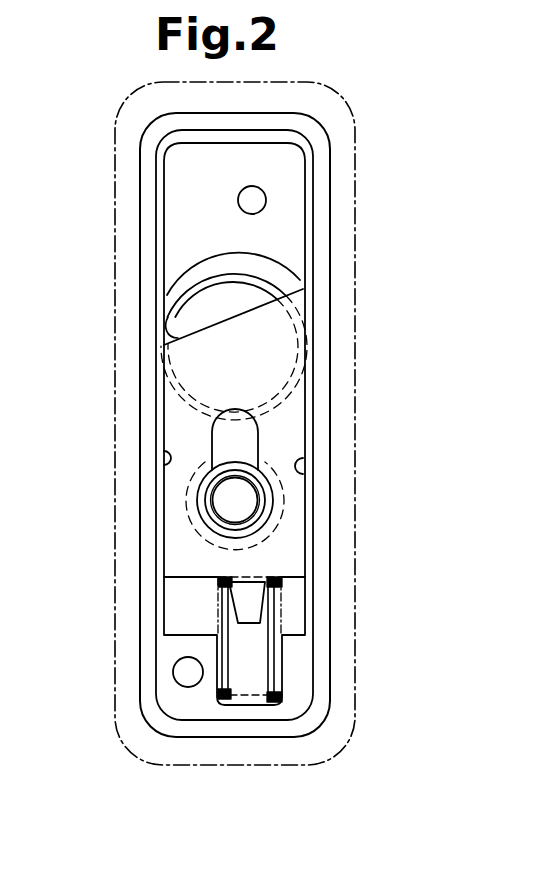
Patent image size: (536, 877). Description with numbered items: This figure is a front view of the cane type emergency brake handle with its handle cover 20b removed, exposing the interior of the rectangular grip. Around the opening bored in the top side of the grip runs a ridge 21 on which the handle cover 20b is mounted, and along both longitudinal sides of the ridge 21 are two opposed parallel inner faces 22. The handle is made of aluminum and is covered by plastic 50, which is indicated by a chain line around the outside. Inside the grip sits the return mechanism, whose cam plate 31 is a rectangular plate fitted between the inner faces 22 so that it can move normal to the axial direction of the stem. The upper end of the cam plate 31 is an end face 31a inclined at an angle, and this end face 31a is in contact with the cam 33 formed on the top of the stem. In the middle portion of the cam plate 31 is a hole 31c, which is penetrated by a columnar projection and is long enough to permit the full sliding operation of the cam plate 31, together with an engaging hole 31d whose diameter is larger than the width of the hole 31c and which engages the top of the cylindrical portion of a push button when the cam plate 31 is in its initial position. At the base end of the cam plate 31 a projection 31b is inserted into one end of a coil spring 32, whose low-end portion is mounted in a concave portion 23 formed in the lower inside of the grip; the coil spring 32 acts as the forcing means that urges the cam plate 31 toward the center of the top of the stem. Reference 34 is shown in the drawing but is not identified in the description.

The handle cover 20b is at (317, 136).
The ridge 21 is at (312, 168).
The parallel inner faces 22 is at (158, 457).
The concave portion 23 is at (276, 678).
The cam plate 31 is at (300, 410).
The end face 31a is at (303, 285).
The projection 31b is at (255, 603).
The hole 31c is at (262, 437).
The engaging hole 31d is at (265, 518).
The coil spring 32 is at (285, 590).
The cam 33 is at (205, 294).
The pin 34 is at (185, 321).
The plastic 50 is at (312, 768).